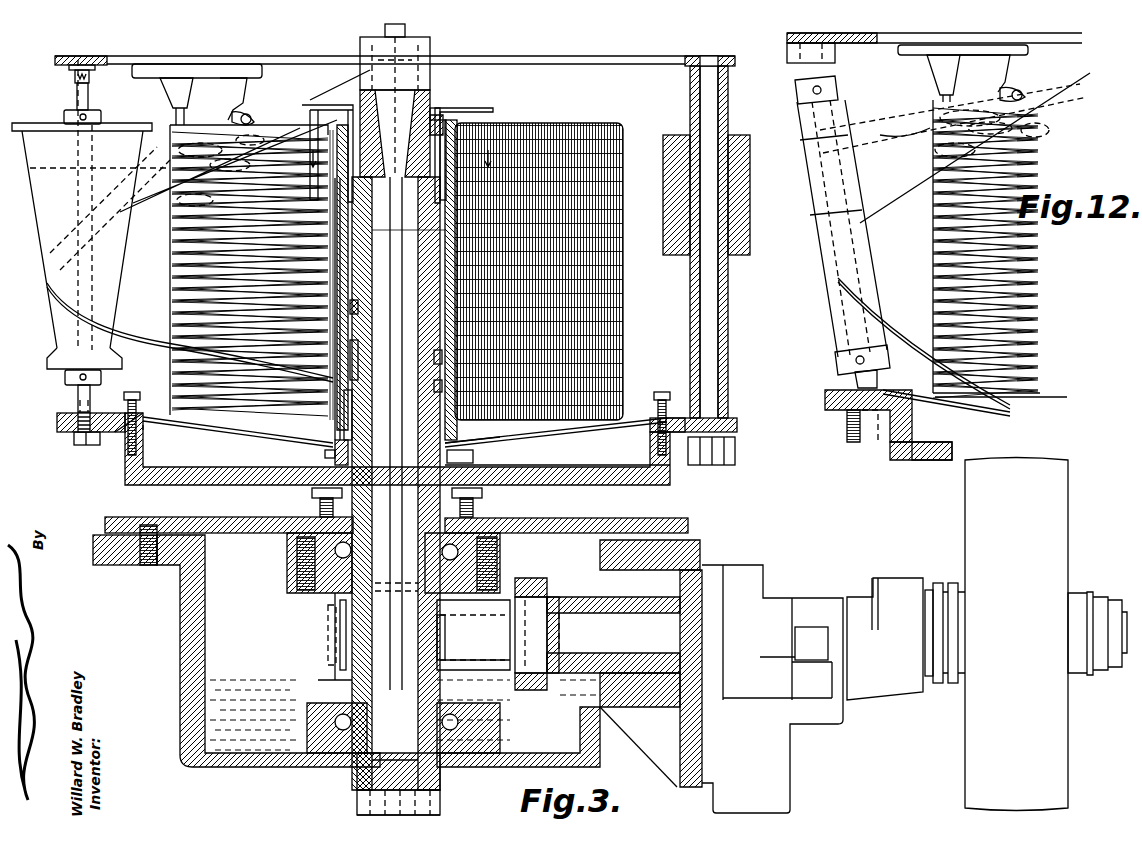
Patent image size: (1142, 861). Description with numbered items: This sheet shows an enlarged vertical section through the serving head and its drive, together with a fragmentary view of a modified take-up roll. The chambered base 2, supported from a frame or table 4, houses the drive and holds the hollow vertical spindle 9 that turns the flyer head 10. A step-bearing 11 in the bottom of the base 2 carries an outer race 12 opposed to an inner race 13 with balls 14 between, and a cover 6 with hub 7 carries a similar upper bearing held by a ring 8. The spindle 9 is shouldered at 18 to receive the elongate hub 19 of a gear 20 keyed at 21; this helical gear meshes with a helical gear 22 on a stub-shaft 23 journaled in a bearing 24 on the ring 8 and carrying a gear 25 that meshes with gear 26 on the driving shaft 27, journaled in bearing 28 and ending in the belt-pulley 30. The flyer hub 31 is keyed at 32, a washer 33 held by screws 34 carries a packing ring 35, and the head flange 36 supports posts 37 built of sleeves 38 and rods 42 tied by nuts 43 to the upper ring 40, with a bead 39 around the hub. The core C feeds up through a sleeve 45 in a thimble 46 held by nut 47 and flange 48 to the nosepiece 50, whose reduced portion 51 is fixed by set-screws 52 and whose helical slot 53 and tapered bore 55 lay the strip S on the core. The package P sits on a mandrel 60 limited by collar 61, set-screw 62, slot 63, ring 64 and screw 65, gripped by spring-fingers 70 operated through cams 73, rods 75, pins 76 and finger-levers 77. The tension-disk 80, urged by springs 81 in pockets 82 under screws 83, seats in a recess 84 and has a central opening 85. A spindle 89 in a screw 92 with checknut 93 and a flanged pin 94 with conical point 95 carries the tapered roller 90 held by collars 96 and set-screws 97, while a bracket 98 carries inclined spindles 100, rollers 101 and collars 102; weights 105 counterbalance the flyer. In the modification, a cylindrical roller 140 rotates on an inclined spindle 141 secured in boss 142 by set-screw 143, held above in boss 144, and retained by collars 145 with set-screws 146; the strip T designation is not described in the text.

In FIG. 3, the chambered base 2 is at (180, 632).
In FIG. 3, the frame or table 4 is at (125, 545).
In FIG. 3, the cover 6 is at (220, 520).
In FIG. 3, the hub 7 is at (500, 558).
In FIG. 3, the ring 8 is at (287, 578).
In FIG. 3, the vertical shaft or spindle 9 is at (366, 276).
In FIG. 3, the head or flyer 10 is at (670, 482).
In FIG. 12, the head or flyer 10 is at (895, 460).
In FIG. 3, the step-bearing 11 is at (310, 720).
In FIG. 3, the outer race 12 is at (325, 725).
In FIG. 3, the inner race 13 is at (345, 596).
In FIG. 3, the balls 14 is at (297, 550).
In FIG. 3, the shoulder 18 is at (473, 634).
In FIG. 3, the elongate hub 19 is at (340, 615).
In FIG. 3, the gear 20 is at (454, 637).
In FIG. 3, the key 21 is at (345, 632).
In FIG. 3, the helical gear 22 is at (355, 690).
In FIG. 3, the stub-shaft 23 is at (500, 660).
In FIG. 3, the bearing 24 is at (531, 635).
In FIG. 3, the gear 25 is at (532, 590).
In FIG. 3, the gear 26 is at (552, 596).
In FIG. 3, the driving shaft 27 is at (735, 639).
In FIG. 3, the bearing 28 is at (685, 600).
In FIG. 3, the belt-pulley 30 is at (1026, 634).
In FIG. 3, the central hub 31 is at (480, 470).
In FIG. 3, the key 32 is at (325, 454).
In FIG. 3, the washer 33 is at (320, 509).
In FIG. 3, the screws 34 is at (312, 493).
In FIG. 3, the packing ring 35 is at (473, 509).
In FIG. 3, the annular flange 36 is at (737, 428).
In FIG. 12, the annular flange 36 is at (825, 403).
In FIG. 3, the posts 37 is at (700, 302).
In FIG. 3, the tubular sleeves 38 is at (728, 362).
In FIG. 3, the annular bead or flange 39 is at (473, 456).
In FIG. 3, the ring 40 is at (619, 52).
In FIG. 12, the ring 40 is at (870, 43).
In FIG. 3, the rods 42 is at (718, 379).
In FIG. 3, the nuts 43 is at (735, 450).
In FIG. 3, the tubular sleeve 45 is at (375, 770).
In FIG. 3, the thimble 46 is at (440, 790).
In FIG. 3, the nut 47 is at (440, 808).
In FIG. 3, the flange 48 is at (360, 758).
In FIG. 3, the nosepiece or strand-guide 50 is at (431, 92).
In FIG. 3, the reduced portion 51 is at (447, 140).
In FIG. 3, the set-screws 52 is at (442, 110).
In FIG. 3, the helical guiding slot 53 is at (432, 56).
In FIG. 3, the axial tapered bore 55 is at (398, 90).
In FIG. 3, the sleeve or hollow mandrel 60 is at (338, 197).
In FIG. 3, the collar 61 is at (432, 360).
In FIG. 3, the set-screw 62 is at (360, 350).
In FIG. 3, the internal annular slot 63 is at (360, 332).
In FIG. 3, the ring 64 is at (358, 390).
In FIG. 3, the screw 65 is at (432, 386).
In FIG. 3, the spring-fingers 70 is at (340, 195).
In FIG. 3, the cams 73 is at (338, 188).
In FIG. 3, the rods 75 is at (318, 118).
In FIG. 3, the pins 76 is at (340, 180).
In FIG. 3, the finger-levers 77 is at (330, 108).
In FIG. 3, the tension-disk 80 is at (224, 438).
In FIG. 12, the tension-disk 80 is at (968, 414).
In FIG. 3, the helical springs 81 is at (143, 430).
In FIG. 3, the pockets 82 is at (130, 440).
In FIG. 3, the screws 83 is at (133, 392).
In FIG. 3, the recess 84 is at (668, 420).
In FIG. 3, the opening 85 is at (335, 445).
In FIG. 3, the vertical spindle 89 is at (78, 402).
In FIG. 3, the tapered roller 90 is at (45, 260).
In FIG. 3, the screw 92 is at (57, 424).
In FIG. 3, the checknut 93 is at (74, 440).
In FIG. 3, the flanged pin 94 is at (81, 56).
In FIG. 3, the conical point 95 is at (75, 76).
In FIG. 3, the collars 96 is at (101, 115).
In FIG. 3, the set-screws 97 is at (85, 115).
In FIG. 3, the bracket 98 is at (183, 64).
In FIG. 12, the bracket 98 is at (930, 55).
In FIG. 3, the inclined spindles 100 is at (232, 106).
In FIG. 12, the inclined spindles 100 is at (955, 80).
In FIG. 3, the spool-shaped rollers 101 is at (258, 112).
In FIG. 12, the spool-shaped rollers 101 is at (1035, 95).
In FIG. 3, the collars 102 is at (232, 64).
In FIG. 12, the collars 102 is at (1030, 78).
In FIG. 3, the cylindrical weights 105 is at (750, 206).
In FIG. 12, the roller 140 is at (833, 338).
In FIG. 12, the inclined spindle or shaft 141 is at (877, 378).
In FIG. 12, the boss 142 is at (865, 445).
In FIG. 12, the set-screw 143 is at (850, 430).
In FIG. 12, the boss 144 is at (792, 63).
In FIG. 12, the collars 145 is at (797, 95).
In FIG. 12, the set-screws 146 is at (822, 90).
In FIG. 3, the core C is at (452, 236).
In FIG. 3, the package P is at (623, 334).
In FIG. 12, the package P is at (932, 243).
In FIG. 3, the paper strip S is at (62, 197).
In FIG. 12, the paper strip S is at (905, 330).
In FIG. 3, the tray plate T is at (520, 440).